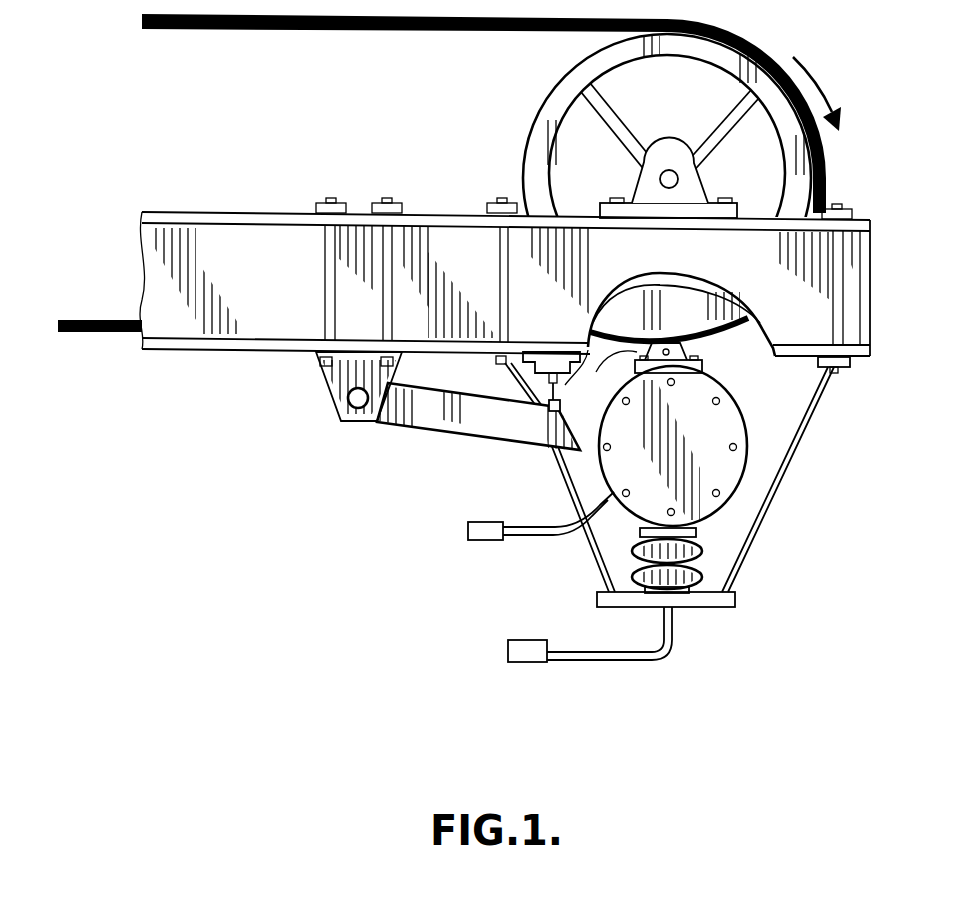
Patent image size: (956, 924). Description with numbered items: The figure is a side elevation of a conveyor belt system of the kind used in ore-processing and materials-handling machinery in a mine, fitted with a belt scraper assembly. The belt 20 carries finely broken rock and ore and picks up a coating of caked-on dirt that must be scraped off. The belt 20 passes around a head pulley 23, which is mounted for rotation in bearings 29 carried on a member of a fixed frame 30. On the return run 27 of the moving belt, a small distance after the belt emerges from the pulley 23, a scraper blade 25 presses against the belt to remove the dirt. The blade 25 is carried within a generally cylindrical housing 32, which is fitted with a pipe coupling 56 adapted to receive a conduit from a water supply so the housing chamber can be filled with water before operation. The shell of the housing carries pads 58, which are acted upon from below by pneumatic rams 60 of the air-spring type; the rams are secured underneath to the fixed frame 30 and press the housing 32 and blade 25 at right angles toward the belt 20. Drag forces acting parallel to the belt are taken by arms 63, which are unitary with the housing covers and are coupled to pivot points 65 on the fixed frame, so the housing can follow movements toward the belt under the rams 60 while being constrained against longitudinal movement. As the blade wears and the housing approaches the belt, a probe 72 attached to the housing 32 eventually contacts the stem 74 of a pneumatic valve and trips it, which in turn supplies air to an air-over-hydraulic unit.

The belt 20 is at (262, 51).
The head pulley 23 is at (590, 102).
The scraper blade 25 is at (685, 348).
The return run 27 is at (637, 373).
The bearings 29 is at (668, 170).
The fixed frame 30 is at (212, 240).
The housing 32 is at (746, 432).
The pipe coupling 56 is at (538, 536).
The pads 58 is at (700, 532).
The pneumatic rams 60 is at (700, 557).
The arms 63 is at (428, 418).
The pivot points 65 is at (352, 404).
The probe 72 is at (558, 474).
The stem 74 is at (548, 406).